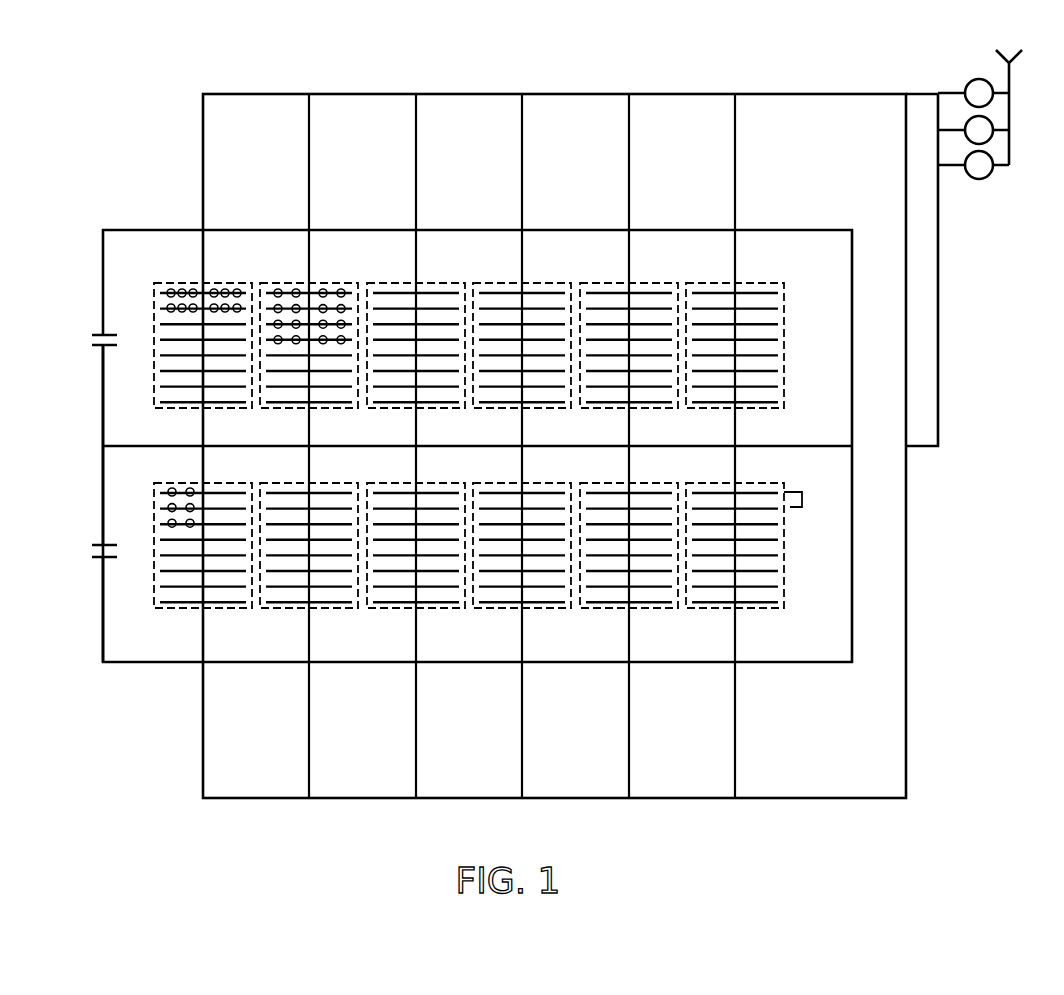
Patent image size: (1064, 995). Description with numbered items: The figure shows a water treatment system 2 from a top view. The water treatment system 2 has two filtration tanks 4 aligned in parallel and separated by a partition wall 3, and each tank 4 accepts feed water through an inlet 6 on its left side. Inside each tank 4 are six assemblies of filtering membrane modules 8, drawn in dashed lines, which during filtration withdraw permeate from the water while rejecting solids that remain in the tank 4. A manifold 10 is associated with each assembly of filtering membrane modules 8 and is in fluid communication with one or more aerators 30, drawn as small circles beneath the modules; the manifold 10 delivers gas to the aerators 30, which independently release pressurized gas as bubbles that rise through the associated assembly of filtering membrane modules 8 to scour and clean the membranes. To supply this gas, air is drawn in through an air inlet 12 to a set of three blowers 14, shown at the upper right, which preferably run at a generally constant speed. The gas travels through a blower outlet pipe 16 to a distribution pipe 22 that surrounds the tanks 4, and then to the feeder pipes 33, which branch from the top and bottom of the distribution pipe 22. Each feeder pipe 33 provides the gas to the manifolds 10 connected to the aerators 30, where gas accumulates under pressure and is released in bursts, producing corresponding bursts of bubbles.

The water treatment system 2 is at (97, 108).
The partition wall 3 is at (125, 446).
The filtration tank 4 is at (132, 247).
The inlet 6 is at (80, 340).
The assembly of filtering membrane modules 8 is at (225, 262).
The manifold 10 is at (203, 345).
The air inlet 12 is at (1009, 72).
The blower 14 is at (983, 168).
The blower outlet pipe 16 is at (938, 300).
The distribution pipe 22 is at (906, 632).
The aerator 30 is at (193, 289).
The feeder pipe 33 is at (203, 122).